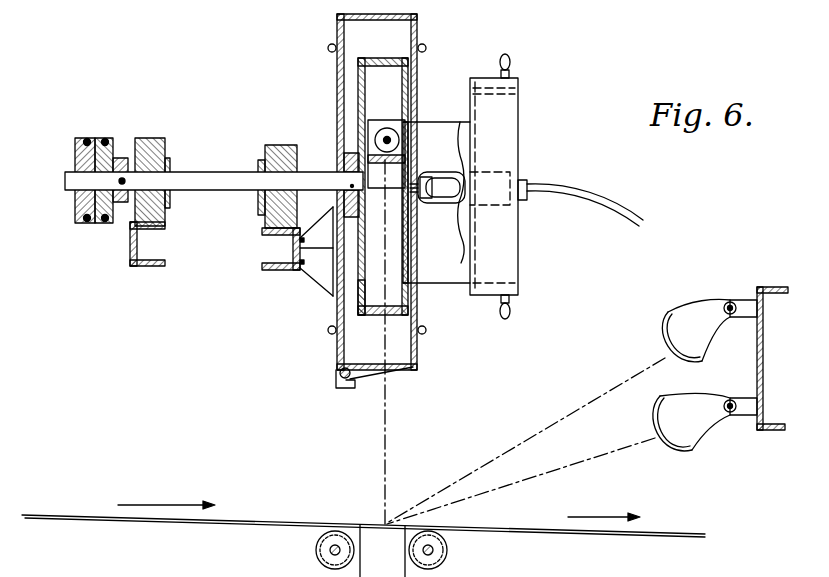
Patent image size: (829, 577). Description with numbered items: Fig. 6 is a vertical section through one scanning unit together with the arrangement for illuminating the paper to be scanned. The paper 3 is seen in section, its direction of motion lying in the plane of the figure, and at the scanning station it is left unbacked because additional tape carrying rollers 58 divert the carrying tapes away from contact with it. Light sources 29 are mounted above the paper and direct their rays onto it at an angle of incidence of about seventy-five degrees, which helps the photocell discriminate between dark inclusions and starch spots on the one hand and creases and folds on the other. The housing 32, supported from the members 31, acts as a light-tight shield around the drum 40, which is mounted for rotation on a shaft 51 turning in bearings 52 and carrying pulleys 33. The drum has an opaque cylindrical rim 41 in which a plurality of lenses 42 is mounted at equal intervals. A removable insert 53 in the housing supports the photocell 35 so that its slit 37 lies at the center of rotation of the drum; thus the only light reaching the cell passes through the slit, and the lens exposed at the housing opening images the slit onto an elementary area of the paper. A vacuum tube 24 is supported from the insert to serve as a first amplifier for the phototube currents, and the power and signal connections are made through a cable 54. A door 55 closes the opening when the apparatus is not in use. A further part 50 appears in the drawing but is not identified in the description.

The paper 3 is at (680, 522).
The vacuum tube 24 is at (455, 196).
The light sources 29 is at (705, 351).
The members 31 is at (137, 266).
The housing 32 is at (418, 26).
The pulleys 33 is at (100, 138).
The photocell 35 is at (401, 140).
The slit 37 is at (393, 189).
The drum 40 is at (350, 88).
The opaque cylindrical rim 41 is at (364, 318).
The lenses 42 is at (387, 316).
The lamp bracket 50 is at (761, 287).
The shaft 51 is at (216, 191).
The bearings 52 is at (167, 150).
The removable insert 53 is at (519, 112).
The cable 54 is at (602, 182).
The door 55 is at (396, 369).
The tape carrying rollers 58 is at (314, 549).